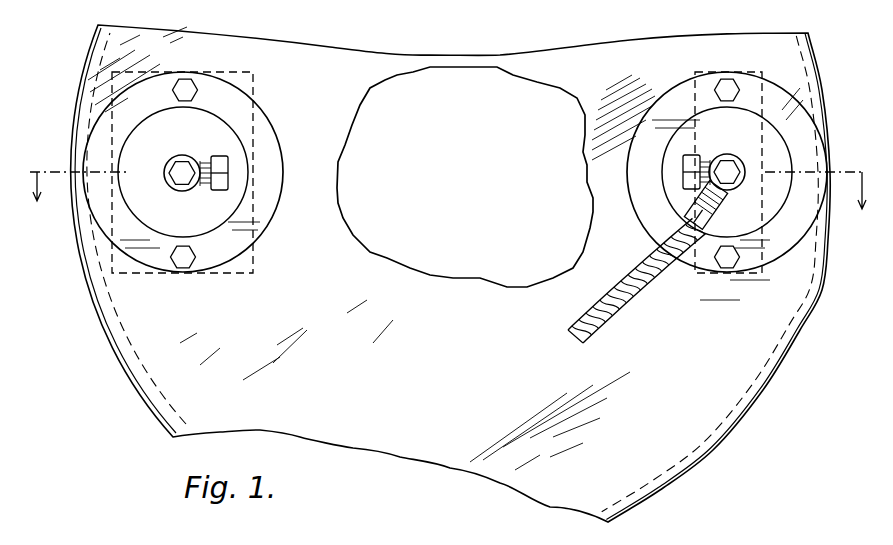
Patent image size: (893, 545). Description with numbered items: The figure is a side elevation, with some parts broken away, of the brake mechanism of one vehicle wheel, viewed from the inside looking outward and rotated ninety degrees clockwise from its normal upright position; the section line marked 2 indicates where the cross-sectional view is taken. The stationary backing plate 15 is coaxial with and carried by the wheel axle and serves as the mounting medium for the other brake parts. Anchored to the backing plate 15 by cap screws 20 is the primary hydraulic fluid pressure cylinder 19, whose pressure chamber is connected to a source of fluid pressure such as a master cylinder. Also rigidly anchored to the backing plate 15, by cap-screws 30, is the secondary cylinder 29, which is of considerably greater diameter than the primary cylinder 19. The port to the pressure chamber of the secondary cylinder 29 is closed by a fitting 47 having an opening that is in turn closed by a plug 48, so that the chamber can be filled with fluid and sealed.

The backing plate 15 is at (138, 357).
The primary hydraulic fluid pressure cylinder 19 is at (697, 72).
The cap screws 20 is at (730, 86).
The secondary cylinder 29 is at (250, 77).
The cap-screws 30 is at (189, 84).
The fitting 47 is at (186, 157).
The plug 48 is at (229, 173).
The section line 2- 2 is at (448, 178).